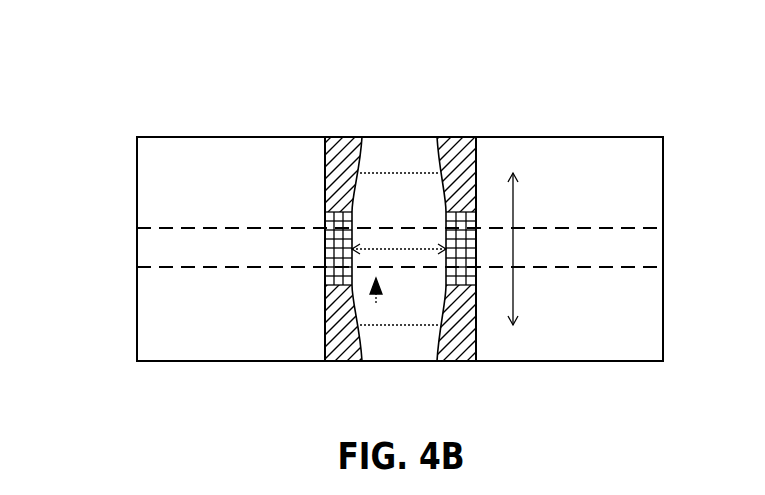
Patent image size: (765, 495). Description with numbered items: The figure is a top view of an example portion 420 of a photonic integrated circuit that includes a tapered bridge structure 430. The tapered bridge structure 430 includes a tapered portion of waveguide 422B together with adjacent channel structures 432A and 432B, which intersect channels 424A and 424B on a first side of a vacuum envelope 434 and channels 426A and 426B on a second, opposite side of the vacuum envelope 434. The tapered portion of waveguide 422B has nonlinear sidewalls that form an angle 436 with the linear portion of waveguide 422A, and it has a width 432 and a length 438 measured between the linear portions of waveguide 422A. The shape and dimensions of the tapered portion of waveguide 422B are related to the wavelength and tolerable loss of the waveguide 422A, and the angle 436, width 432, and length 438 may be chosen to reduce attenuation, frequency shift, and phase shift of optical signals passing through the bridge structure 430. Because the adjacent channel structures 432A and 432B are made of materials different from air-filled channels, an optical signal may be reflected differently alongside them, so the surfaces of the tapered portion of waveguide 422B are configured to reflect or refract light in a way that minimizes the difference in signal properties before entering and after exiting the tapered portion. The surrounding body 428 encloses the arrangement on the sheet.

The portion of a photonic integrated circuit 420 is at (130, 52).
The linear portion of waveguide 422A is at (399, 158).
The tapered portion of waveguide 422B is at (399, 193).
The channel 424A is at (345, 362).
The channel 424B is at (453, 362).
The channel 426A is at (347, 137).
The channel 426B is at (448, 137).
The housing body 428 is at (157, 147).
The tapered bridge structure 430 is at (376, 304).
The width 432 is at (370, 236).
The adjacent channel structure 432A is at (347, 212).
The adjacent channel structure 432B is at (447, 212).
The vacuum envelope 434 is at (622, 230).
The angle 436 is at (438, 217).
The length 438 is at (515, 297).